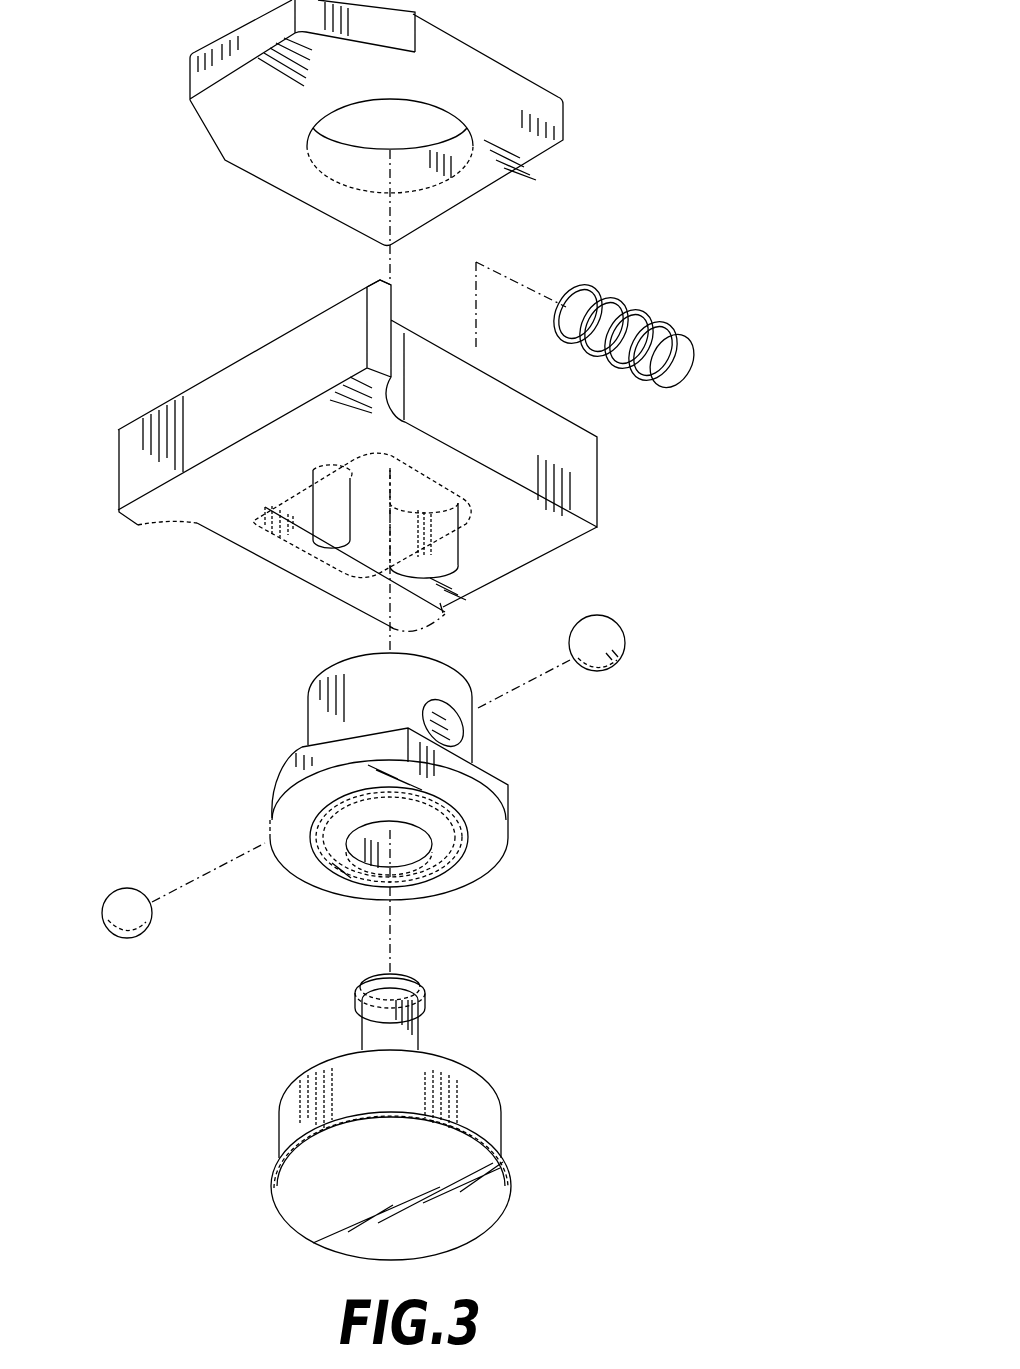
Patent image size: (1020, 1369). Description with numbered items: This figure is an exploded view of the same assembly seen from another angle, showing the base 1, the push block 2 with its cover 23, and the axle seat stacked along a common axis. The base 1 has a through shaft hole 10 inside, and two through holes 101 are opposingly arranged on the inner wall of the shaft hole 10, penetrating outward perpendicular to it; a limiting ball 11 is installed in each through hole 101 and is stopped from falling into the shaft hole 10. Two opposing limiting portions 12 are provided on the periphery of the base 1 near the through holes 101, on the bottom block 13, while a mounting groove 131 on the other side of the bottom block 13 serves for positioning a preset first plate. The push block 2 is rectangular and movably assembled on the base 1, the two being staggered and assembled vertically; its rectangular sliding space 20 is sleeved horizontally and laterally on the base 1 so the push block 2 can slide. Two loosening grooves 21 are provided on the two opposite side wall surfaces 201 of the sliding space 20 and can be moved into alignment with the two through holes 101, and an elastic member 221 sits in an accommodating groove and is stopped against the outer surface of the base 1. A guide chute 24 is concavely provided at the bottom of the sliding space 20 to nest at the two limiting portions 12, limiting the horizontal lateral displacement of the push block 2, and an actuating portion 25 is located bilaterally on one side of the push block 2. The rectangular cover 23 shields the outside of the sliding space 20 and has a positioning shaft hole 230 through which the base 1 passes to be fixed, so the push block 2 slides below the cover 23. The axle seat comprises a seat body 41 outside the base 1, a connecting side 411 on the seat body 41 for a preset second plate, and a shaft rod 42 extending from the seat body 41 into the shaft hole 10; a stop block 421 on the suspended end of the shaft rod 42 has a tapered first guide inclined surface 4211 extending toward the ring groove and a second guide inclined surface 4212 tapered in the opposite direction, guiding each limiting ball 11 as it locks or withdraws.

The base 1 is at (389, 783).
The shaft hole 10 is at (405, 847).
The through hole 101 is at (457, 740).
The limiting ball 11 is at (603, 652).
The limiting portion 12 is at (493, 797).
The bottom block 13 is at (292, 812).
The mounting groove 131 is at (365, 807).
The push block 2 is at (357, 449).
The sliding space 20 is at (478, 530).
The side wall surface 201 is at (368, 528).
The loosening groove 21 is at (330, 510).
The elastic member 221 is at (672, 360).
The cover 23 is at (388, 123).
The positioning shaft hole 230 is at (433, 128).
The guide chute 24 is at (437, 613).
The actuating portion 25 is at (375, 297).
The seat body 41 is at (354, 1155).
The connecting side 411 is at (363, 1118).
The shaft rod 42 is at (387, 1035).
The stop block 421 is at (386, 980).
The first guide inclined surface 4211 is at (370, 993).
The second guide inclined surface 4212 is at (377, 975).